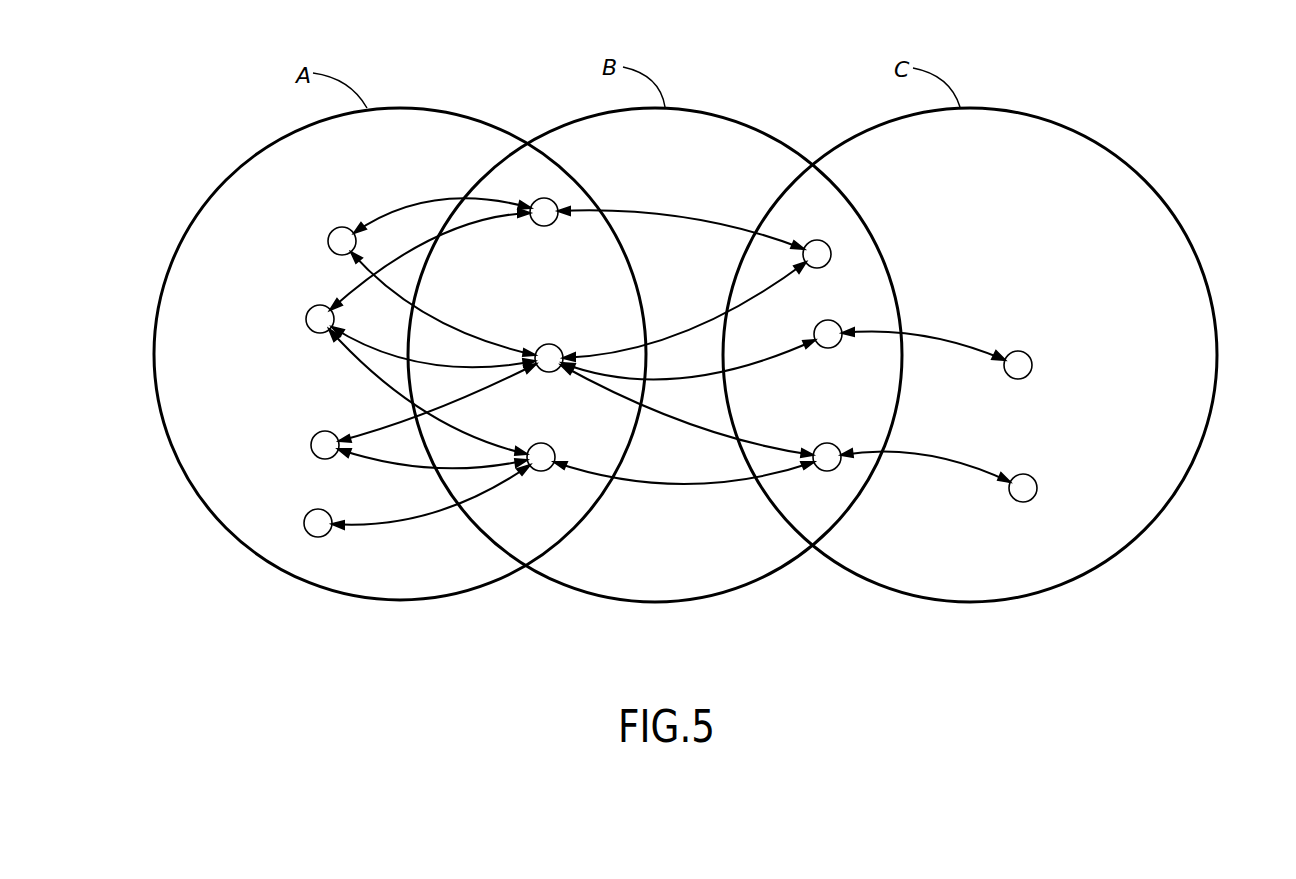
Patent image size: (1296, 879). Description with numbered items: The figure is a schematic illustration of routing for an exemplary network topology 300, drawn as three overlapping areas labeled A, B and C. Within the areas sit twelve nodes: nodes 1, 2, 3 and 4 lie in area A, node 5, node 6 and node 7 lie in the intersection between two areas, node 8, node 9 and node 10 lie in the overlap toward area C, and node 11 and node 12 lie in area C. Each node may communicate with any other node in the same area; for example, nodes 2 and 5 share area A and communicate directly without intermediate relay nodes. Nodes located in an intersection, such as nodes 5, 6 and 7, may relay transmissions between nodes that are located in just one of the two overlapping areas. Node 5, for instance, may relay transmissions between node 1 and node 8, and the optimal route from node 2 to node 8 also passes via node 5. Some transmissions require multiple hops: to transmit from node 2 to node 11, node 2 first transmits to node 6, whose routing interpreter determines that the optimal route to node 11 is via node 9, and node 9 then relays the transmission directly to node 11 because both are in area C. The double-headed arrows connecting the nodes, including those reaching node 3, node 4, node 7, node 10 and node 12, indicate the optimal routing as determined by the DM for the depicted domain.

The network topology 300 is at (1152, 62).
The node 1 is at (342, 241).
The node 2 is at (320, 319).
The node 3 is at (325, 445).
The node 4 is at (318, 523).
The node 5 is at (544, 212).
The node 6 is at (549, 358).
The node 7 is at (541, 457).
The node 8 is at (817, 254).
The node 9 is at (828, 334).
The node 10 is at (827, 457).
The node 11 is at (1018, 365).
The node 12 is at (1023, 488).